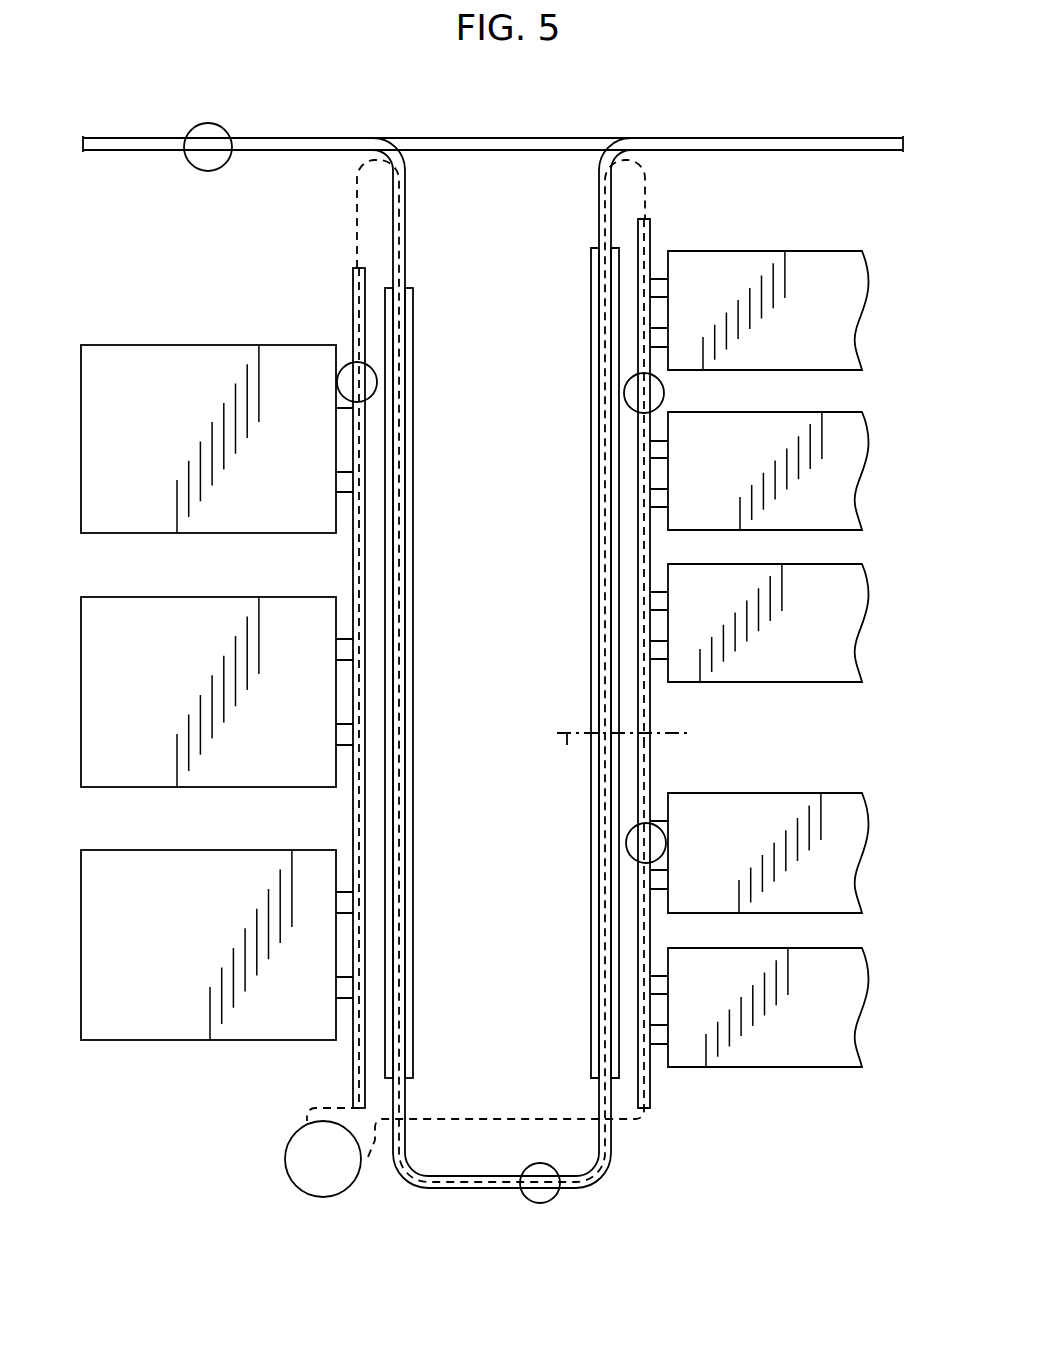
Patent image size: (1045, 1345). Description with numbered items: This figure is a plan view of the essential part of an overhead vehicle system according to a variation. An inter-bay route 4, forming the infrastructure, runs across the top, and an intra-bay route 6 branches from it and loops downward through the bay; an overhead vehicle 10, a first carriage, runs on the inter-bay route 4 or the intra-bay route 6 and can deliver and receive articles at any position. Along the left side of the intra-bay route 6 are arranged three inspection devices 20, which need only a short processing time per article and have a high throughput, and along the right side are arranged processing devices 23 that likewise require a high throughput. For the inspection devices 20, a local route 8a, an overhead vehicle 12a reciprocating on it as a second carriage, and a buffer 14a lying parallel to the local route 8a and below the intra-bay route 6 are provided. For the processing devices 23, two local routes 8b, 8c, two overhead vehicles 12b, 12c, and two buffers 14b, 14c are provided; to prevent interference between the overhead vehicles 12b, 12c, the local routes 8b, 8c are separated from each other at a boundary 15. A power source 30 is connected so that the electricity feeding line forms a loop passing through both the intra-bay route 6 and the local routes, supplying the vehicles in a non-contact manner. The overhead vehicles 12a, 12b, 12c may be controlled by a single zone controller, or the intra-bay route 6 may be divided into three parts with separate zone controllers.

The inter-bay route 4 is at (783, 138).
The intra-bay route 6 is at (598, 215).
The local route 8a is at (365, 563).
The local route 8b is at (650, 708).
The local route 8c is at (652, 1104).
The overhead vehicle 10 is at (209, 123).
The overhead vehicle 12a is at (377, 383).
The overhead vehicle 12b is at (665, 393).
The overhead vehicle 12c is at (626, 847).
The buffer 14a is at (413, 665).
The buffer 14b is at (591, 500).
The buffer 14c is at (591, 945).
The boundary 15 is at (567, 745).
The inspection device 20 is at (179, 345).
The processing device 23 is at (848, 288).
The power source 30 is at (285, 1167).